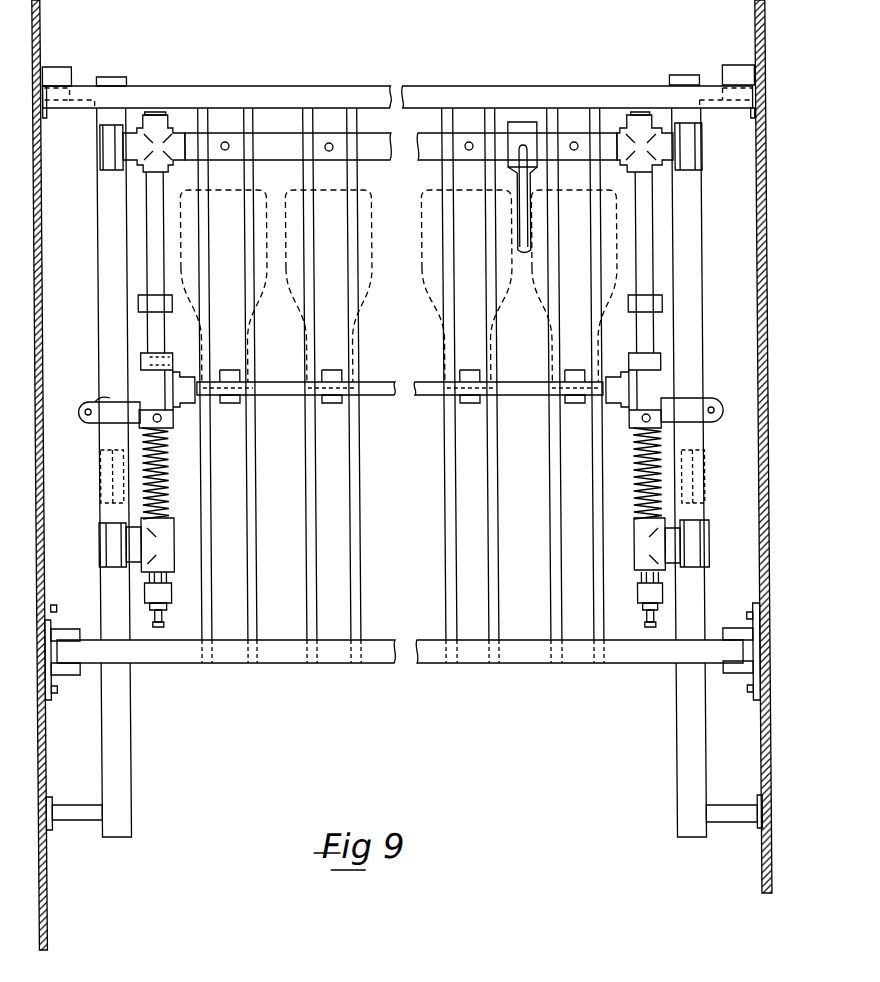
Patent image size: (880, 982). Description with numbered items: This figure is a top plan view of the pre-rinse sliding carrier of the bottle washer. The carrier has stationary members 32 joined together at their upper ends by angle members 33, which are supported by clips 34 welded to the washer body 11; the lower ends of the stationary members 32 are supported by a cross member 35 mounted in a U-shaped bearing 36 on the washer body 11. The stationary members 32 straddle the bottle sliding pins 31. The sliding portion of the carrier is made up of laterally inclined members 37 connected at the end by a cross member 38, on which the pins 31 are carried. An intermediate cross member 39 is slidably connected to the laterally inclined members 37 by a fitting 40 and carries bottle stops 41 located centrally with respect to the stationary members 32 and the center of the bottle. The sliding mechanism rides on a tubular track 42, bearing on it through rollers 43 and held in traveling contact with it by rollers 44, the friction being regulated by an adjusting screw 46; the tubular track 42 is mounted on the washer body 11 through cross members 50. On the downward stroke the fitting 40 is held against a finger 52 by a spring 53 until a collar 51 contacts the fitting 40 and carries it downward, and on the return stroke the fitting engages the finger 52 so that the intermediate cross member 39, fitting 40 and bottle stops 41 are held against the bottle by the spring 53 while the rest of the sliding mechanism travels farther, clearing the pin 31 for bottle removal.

The washer body 11 is at (43, 902).
The pin 31 is at (223, 142).
The stationary members 32 is at (312, 548).
The angle members 33 is at (518, 92).
The clips 34 is at (53, 75).
The cross member 35 is at (523, 652).
The U-shaped bearing 36 is at (70, 670).
The laterally inclined members 37 is at (150, 227).
The cross member 38 is at (580, 138).
The intermediate cross member 39 is at (375, 390).
The fitting 40 is at (173, 362).
The bottle stops 41 is at (257, 395).
The tubular track 42 is at (120, 792).
The rollers 43 is at (108, 145).
The rollers 44 is at (105, 472).
The adjusting screw 46 is at (158, 630).
The cross members 50 is at (78, 818).
The collar 51 is at (147, 302).
The finger 52 is at (108, 403).
The spring 53 is at (168, 482).